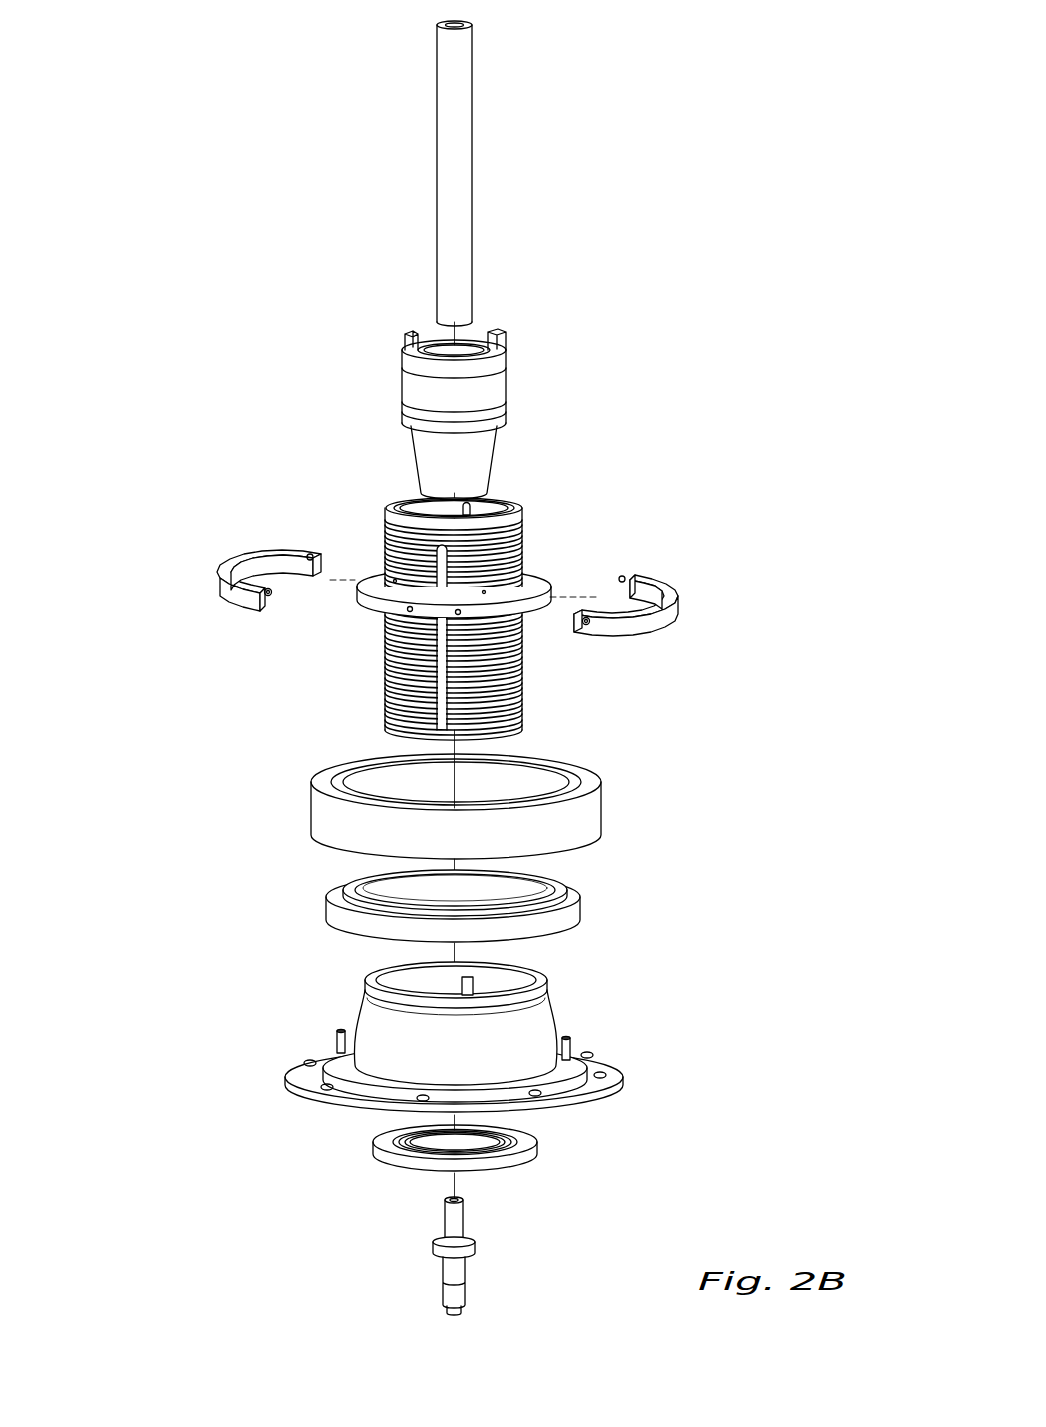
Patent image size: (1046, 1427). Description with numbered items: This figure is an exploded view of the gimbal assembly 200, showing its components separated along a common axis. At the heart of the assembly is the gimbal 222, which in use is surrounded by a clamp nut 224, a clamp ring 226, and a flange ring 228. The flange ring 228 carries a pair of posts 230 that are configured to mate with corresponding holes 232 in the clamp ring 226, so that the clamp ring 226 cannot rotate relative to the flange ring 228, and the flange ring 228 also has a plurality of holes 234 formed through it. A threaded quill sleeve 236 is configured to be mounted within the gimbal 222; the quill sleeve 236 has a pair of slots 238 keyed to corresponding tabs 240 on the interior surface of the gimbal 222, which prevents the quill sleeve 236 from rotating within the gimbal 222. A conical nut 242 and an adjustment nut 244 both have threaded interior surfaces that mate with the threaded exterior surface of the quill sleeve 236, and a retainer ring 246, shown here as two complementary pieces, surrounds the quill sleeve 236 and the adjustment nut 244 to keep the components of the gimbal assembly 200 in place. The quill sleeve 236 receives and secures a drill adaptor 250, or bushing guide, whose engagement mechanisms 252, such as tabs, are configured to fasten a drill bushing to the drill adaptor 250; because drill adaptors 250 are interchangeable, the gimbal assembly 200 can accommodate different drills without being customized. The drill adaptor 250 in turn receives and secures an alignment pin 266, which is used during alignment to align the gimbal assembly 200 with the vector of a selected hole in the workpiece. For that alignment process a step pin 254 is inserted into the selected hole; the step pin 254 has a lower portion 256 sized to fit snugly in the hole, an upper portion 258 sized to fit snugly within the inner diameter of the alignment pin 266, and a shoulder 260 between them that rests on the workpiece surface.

The gimbal assembly 200 is at (198, 139).
The alignment pin 266 is at (467, 157).
The drill adaptor 250 is at (468, 414).
The engagement mechanism 252 is at (405, 338).
The quill sleeve 236 is at (442, 603).
The slot 238 is at (437, 733).
The adjustment nut 244 is at (538, 578).
The retainer ring 246 is at (680, 590).
The clamp nut 224 is at (595, 805).
The clamp ring 226 is at (476, 894).
The hole 232 is at (345, 888).
The gimbal 222 is at (505, 1015).
The tab 240 is at (468, 978).
The post 230 is at (341, 1030).
The flange ring 228 is at (437, 1071).
The holes 234 is at (303, 1055).
The conical nut 242 is at (380, 1145).
The step pin 254 is at (431, 1243).
The upper portion 258 is at (460, 1215).
The shoulder 260 is at (474, 1247).
The lower portion 256 is at (463, 1270).